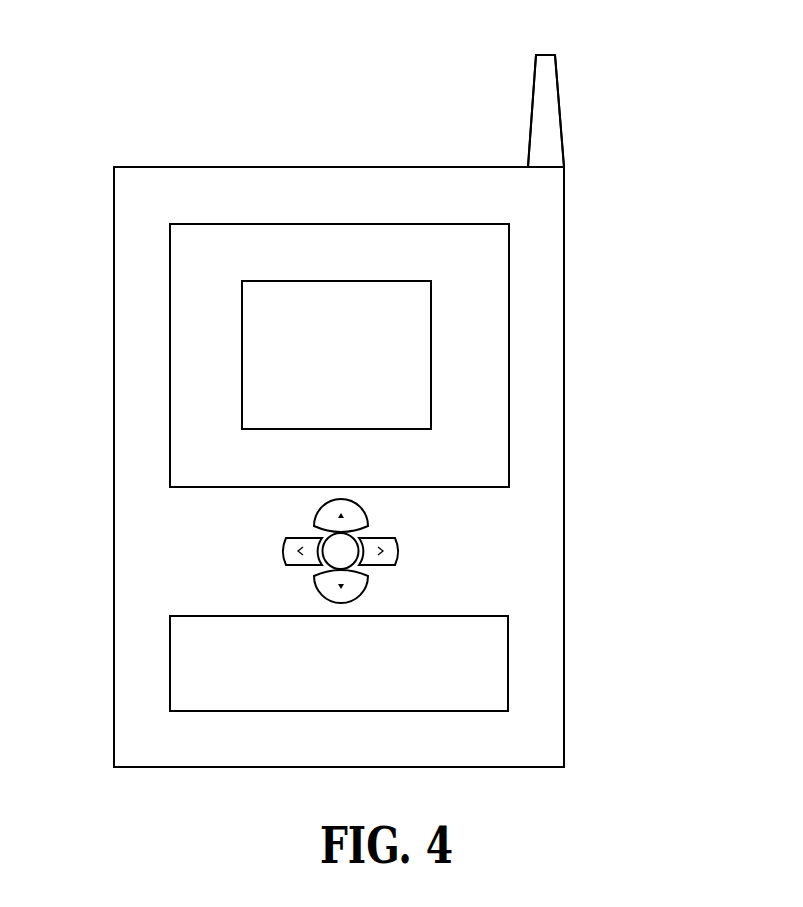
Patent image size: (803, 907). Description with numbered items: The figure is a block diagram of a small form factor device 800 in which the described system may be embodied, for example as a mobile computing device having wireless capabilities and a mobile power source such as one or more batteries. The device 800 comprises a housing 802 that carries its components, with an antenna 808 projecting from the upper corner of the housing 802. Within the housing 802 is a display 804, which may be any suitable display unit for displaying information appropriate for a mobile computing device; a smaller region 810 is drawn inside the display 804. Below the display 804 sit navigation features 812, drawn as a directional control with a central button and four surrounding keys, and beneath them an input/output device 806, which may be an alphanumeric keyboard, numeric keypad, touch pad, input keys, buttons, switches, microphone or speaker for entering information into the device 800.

The small form factor device 800 is at (130, 70).
The housing 802 is at (564, 468).
The display 804 is at (509, 242).
The input/output (I/O) device 806 is at (508, 654).
The antenna 808 is at (532, 103).
The display window region 810 is at (431, 374).
The navigation features 812 is at (425, 540).